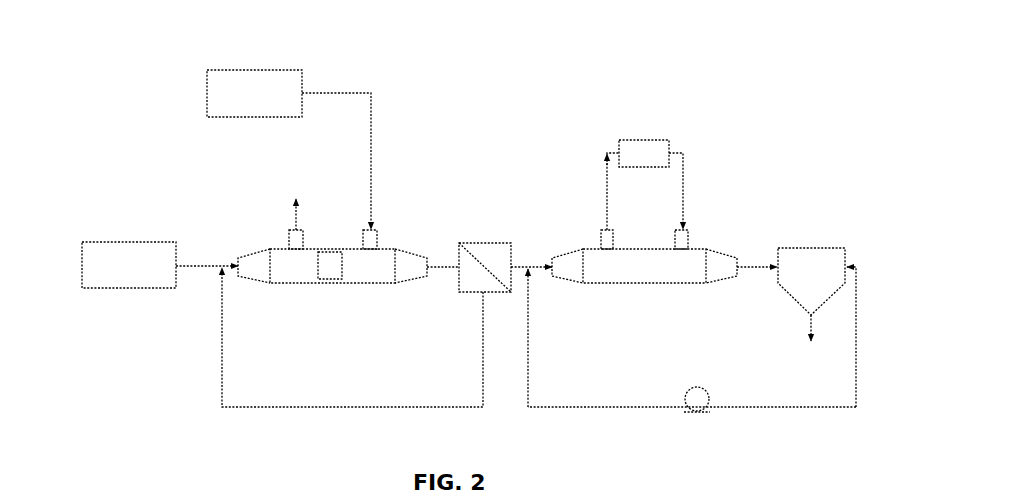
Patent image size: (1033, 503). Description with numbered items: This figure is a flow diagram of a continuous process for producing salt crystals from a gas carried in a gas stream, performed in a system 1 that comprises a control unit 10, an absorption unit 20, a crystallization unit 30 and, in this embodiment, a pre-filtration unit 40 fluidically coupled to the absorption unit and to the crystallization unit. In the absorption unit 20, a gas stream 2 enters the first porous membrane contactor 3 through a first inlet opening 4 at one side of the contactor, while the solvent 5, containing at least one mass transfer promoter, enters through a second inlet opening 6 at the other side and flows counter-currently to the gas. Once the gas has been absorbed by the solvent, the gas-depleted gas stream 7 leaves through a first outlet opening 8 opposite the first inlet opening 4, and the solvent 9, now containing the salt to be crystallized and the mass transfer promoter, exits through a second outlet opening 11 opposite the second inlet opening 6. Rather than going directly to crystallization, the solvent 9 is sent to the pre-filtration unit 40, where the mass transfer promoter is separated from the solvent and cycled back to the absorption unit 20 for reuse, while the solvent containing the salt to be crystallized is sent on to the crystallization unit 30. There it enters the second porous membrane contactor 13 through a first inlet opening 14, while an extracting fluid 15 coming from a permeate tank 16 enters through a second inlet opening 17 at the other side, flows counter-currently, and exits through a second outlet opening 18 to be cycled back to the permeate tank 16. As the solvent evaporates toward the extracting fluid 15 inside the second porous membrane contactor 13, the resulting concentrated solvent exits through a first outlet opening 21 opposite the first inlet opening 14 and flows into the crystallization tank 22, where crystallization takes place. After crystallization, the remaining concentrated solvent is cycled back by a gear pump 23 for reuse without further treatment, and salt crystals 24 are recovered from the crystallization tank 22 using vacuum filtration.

The system 1 is at (500, 462).
The gas stream 2 is at (206, 93).
The first porous membrane contactor 3 is at (330, 265).
The first inlet opening 4 is at (373, 237).
The solvent 5 is at (81, 266).
The second inlet opening 6 is at (249, 265).
The gas-depleted gas stream 7 is at (294, 203).
The first outlet opening 8 is at (294, 238).
The solvent containing the salt to be crystallized 9 is at (443, 258).
The control unit 10 is at (230, 128).
The second outlet opening 11 is at (412, 275).
The second porous membrane contactor 13 is at (645, 267).
The first inlet opening 14 is at (568, 262).
The extracting fluid 15 is at (686, 191).
The permeate tank 16 is at (650, 152).
The second inlet opening 17 is at (684, 238).
The second outlet opening 18 is at (604, 238).
The absorption unit 20 is at (317, 318).
The first outlet opening 21 is at (720, 273).
The crystallization tank 22 is at (834, 232).
The gear pump 23 is at (698, 410).
The salt crystals 24 is at (811, 337).
The crystallization unit 30 is at (768, 180).
The pre-filtration unit 40 is at (473, 307).